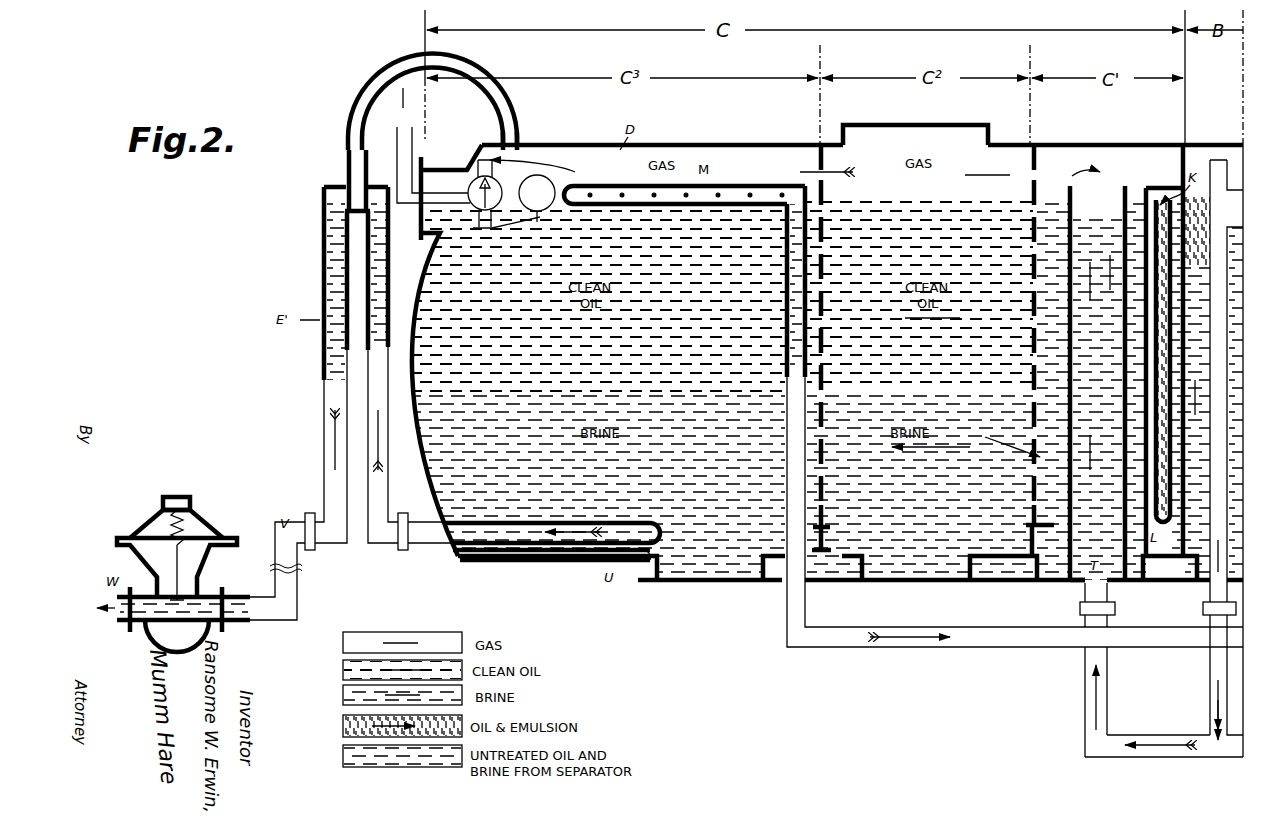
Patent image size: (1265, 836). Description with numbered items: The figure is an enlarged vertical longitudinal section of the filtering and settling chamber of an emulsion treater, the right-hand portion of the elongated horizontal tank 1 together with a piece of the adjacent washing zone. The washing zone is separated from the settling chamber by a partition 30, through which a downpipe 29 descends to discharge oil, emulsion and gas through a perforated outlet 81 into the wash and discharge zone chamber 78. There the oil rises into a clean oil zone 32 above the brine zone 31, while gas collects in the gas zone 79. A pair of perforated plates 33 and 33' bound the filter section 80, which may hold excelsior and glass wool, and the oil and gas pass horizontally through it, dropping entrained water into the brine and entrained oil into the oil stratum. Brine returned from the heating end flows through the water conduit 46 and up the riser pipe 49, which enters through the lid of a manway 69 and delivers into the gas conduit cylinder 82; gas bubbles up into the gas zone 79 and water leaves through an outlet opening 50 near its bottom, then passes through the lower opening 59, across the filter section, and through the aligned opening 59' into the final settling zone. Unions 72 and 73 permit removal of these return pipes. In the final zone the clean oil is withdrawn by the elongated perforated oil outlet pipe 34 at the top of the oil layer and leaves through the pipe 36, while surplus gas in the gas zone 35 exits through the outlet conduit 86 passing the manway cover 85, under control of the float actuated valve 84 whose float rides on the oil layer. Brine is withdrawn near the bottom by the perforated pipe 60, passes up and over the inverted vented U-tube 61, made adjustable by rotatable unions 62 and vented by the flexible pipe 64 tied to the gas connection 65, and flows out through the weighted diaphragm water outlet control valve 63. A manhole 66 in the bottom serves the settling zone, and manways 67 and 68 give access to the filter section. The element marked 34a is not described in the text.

The tank 1 is at (676, 150).
The downpipe 29 is at (1162, 178).
The partition 30 is at (1180, 146).
The brine zone 31 is at (940, 505).
The clean oil zone 32 is at (1036, 203).
The perforated plate 33 is at (1050, 144).
The perforated plate 33' is at (805, 310).
The oil outlet pipe 34 is at (733, 183).
The gas duct 34a is at (782, 622).
The gas zone 35 is at (574, 166).
The pipe 36 is at (986, 646).
The water conduit 46 is at (1140, 752).
The liquid level riser pipe 49 is at (1085, 705).
The outlet opening 50 is at (1052, 548).
The opening 59 is at (1013, 560).
The opening 59' is at (826, 560).
The perforated pipe 60 is at (450, 546).
The U-tube 61 is at (322, 350).
The rotatable unions 62 is at (308, 513).
The water outlet control valve 63 is at (196, 590).
The flexible pipe 64 is at (384, 70).
The connection 65 is at (517, 141).
The manhole 66 is at (665, 583).
The lower manway 67 is at (975, 582).
The upper manway 68 is at (925, 115).
The manway 69 is at (1070, 583).
The union 72 is at (1097, 616).
The union 73 is at (1214, 616).
The wash and discharge zone chamber 78 is at (1172, 600).
The gas zone 79 is at (1097, 365).
The filter section 80 is at (877, 600).
The perforated outlet 81 is at (1148, 563).
The gas conduit cylinder 82 is at (1128, 186).
The float actuated valve 84 is at (480, 164).
The manway cover 85 is at (420, 228).
The outlet conduit 86 is at (412, 142).